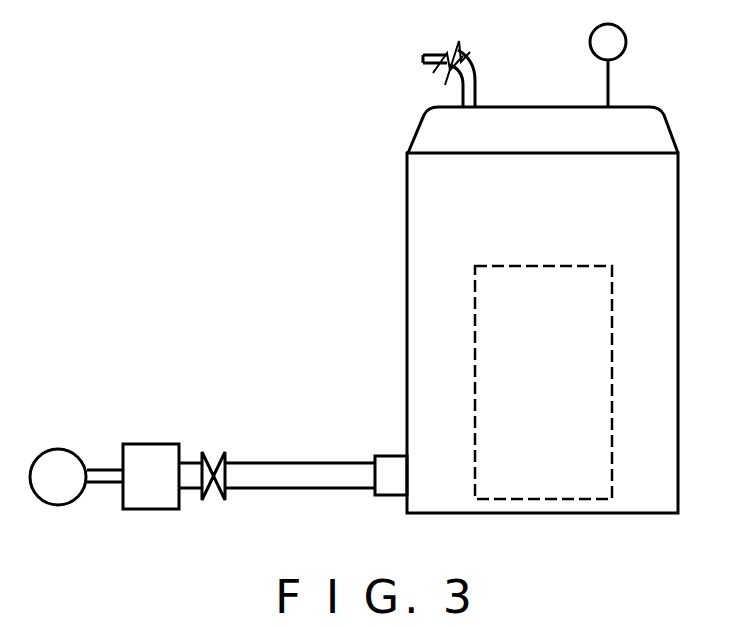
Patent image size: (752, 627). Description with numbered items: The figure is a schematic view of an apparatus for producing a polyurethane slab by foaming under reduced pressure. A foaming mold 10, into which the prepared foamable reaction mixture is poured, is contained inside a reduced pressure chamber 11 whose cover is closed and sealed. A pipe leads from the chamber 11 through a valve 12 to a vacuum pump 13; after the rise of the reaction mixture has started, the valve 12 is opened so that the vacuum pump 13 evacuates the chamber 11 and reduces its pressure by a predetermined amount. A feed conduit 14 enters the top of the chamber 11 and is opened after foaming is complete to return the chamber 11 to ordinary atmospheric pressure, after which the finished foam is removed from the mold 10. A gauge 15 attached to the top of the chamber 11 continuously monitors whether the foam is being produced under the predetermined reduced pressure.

The foaming mold 10 is at (612, 441).
The reduced pressure chamber 11 is at (679, 303).
The valve 12 is at (215, 492).
The vacuum pump 13 is at (78, 502).
The feed conduit 14 is at (421, 59).
The gauge 15 is at (626, 42).